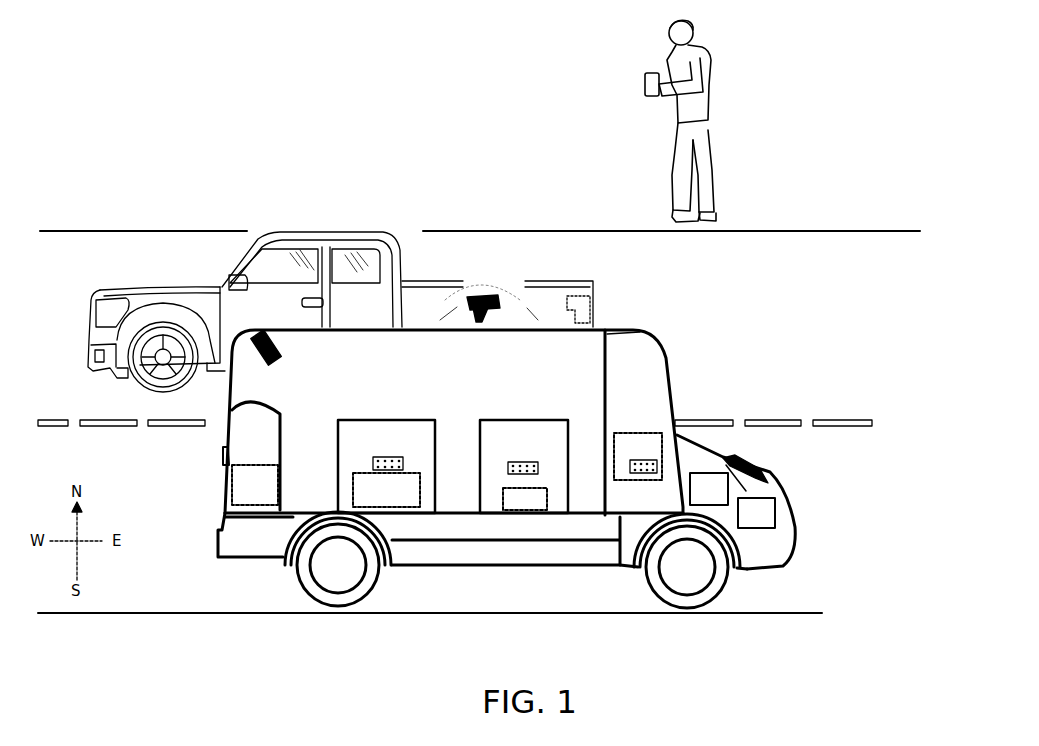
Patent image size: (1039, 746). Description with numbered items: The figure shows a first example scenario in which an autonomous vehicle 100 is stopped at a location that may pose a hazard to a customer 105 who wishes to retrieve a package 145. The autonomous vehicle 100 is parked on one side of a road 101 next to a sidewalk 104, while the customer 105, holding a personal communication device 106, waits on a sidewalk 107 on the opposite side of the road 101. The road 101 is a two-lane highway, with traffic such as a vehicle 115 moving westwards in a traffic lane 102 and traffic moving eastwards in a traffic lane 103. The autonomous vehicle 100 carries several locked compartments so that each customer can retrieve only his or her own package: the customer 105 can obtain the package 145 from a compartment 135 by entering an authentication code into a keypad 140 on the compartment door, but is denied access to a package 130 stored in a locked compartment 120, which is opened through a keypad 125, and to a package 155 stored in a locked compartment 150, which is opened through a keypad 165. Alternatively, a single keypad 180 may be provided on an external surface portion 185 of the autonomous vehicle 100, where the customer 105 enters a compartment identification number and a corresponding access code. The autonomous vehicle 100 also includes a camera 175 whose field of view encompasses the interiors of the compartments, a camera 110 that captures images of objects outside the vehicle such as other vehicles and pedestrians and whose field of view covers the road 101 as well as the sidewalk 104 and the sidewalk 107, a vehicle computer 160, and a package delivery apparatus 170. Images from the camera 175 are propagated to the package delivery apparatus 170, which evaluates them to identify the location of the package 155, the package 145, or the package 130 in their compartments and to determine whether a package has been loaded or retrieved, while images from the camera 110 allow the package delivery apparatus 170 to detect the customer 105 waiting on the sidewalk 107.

The autonomous vehicle 100 is at (688, 363).
The road 101 is at (755, 231).
The traffic lane 102 is at (902, 320).
The traffic lane 103 is at (907, 505).
The sidewalk 104 is at (895, 637).
The customer 105 is at (738, 64).
The personal communication device 106 is at (647, 94).
The sidewalk 107 is at (913, 197).
The camera 110 is at (503, 297).
The vehicle 115 is at (257, 222).
The locked compartment 120 is at (536, 420).
The keypad 125 is at (523, 462).
The package 130 is at (525, 499).
The compartment 135 is at (405, 420).
The keypad 140 is at (394, 457).
The package 145 is at (386, 490).
The locked compartment 150 is at (283, 434).
The package 155 is at (255, 485).
The vehicle computer 160 is at (756, 513).
The keypad 165 is at (221, 456).
The package delivery apparatus 170 is at (709, 489).
The camera 175 is at (292, 355).
The keypad 180 is at (655, 461).
The external surface portion 185 is at (655, 432).